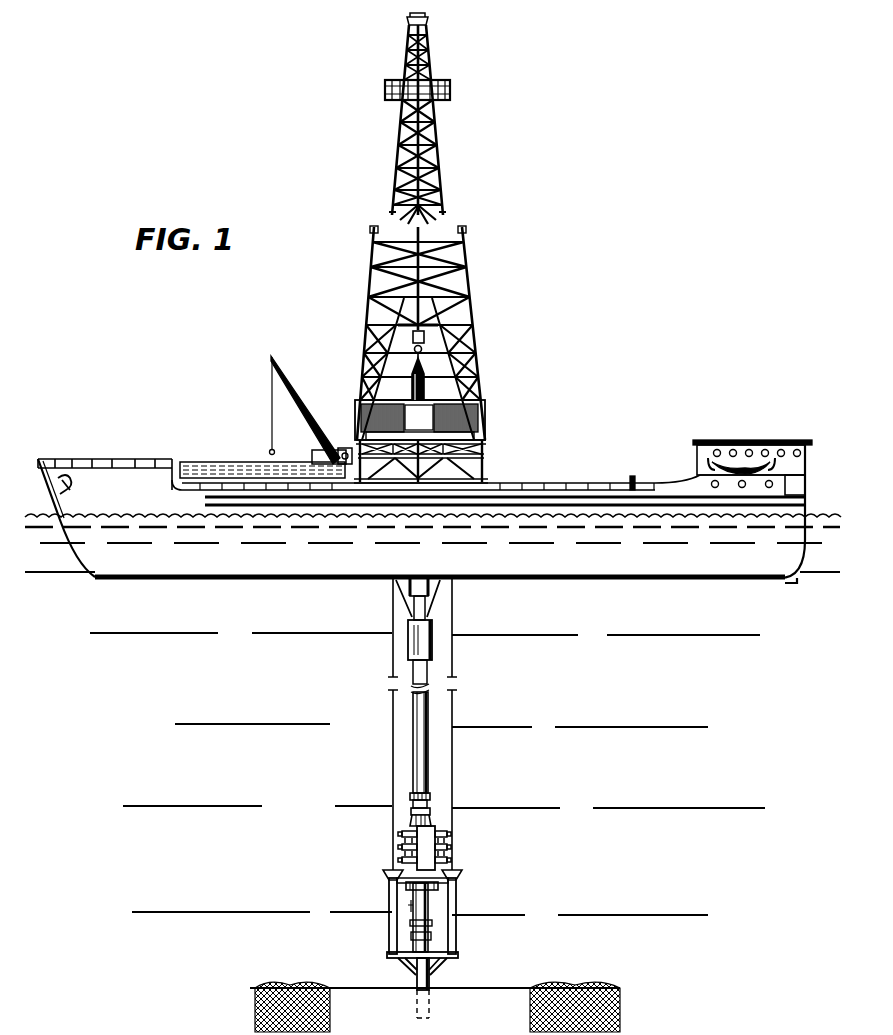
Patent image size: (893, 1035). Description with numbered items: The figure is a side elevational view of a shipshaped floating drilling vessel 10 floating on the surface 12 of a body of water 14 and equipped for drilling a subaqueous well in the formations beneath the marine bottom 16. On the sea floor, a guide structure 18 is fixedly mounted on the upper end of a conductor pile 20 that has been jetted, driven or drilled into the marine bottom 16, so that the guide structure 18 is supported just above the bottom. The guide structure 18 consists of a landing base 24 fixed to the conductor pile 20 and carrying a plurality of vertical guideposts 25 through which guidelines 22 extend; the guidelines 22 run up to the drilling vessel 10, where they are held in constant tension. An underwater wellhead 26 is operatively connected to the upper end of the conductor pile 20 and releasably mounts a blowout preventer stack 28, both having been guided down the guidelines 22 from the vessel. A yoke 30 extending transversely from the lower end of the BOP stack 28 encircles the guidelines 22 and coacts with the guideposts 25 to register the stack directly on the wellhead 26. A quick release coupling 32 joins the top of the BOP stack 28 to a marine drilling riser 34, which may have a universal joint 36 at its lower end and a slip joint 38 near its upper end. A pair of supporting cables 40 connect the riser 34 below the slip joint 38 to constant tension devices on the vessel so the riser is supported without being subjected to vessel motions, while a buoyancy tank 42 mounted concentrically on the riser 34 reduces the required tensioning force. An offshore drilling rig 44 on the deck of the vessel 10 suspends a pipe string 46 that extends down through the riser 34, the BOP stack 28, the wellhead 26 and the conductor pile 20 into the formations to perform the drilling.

The floating drilling vessel 10 is at (745, 436).
The surface of the body of water 12 is at (44, 512).
The body of water 14 is at (613, 777).
The marine bottom 16 is at (494, 988).
The guide structure 18 is at (460, 955).
The conductor pile 20 is at (430, 972).
The guidelines 22 is at (450, 752).
The landing base 24 is at (388, 955).
The vertical guideposts 25 is at (456, 898).
The underwater wellhead 26 is at (430, 921).
The blowout preventer stack 28 is at (428, 855).
The yoke 30 is at (440, 889).
The quick release coupling 32 is at (432, 822).
The marine drilling riser 34 is at (431, 713).
The universal joint 36 is at (410, 800).
The slip joint 38 is at (430, 590).
The supporting cables 40 is at (441, 584).
The buoyancy tank 42 is at (432, 652).
The offshore drilling rig 44 is at (474, 319).
The pipe string 46 is at (414, 378).